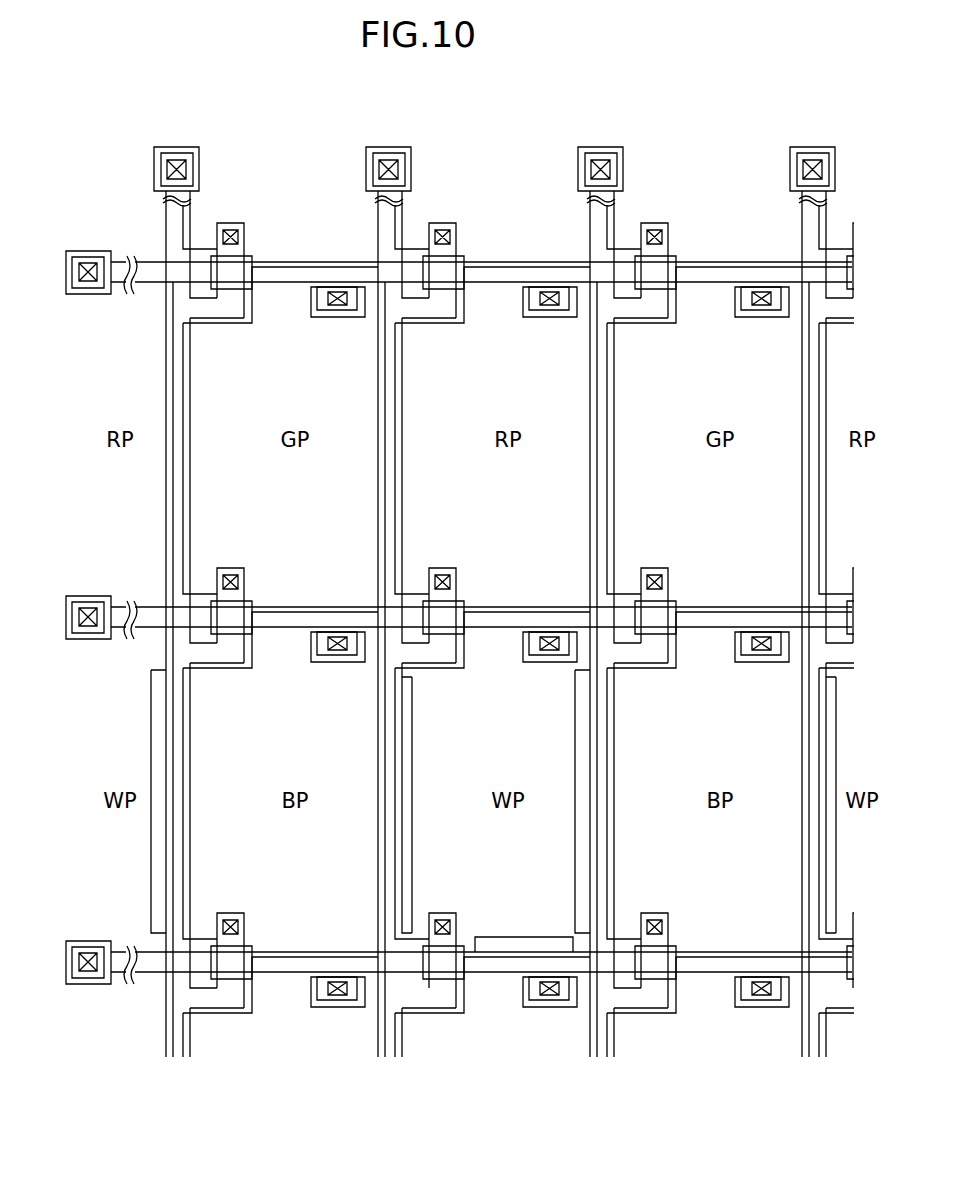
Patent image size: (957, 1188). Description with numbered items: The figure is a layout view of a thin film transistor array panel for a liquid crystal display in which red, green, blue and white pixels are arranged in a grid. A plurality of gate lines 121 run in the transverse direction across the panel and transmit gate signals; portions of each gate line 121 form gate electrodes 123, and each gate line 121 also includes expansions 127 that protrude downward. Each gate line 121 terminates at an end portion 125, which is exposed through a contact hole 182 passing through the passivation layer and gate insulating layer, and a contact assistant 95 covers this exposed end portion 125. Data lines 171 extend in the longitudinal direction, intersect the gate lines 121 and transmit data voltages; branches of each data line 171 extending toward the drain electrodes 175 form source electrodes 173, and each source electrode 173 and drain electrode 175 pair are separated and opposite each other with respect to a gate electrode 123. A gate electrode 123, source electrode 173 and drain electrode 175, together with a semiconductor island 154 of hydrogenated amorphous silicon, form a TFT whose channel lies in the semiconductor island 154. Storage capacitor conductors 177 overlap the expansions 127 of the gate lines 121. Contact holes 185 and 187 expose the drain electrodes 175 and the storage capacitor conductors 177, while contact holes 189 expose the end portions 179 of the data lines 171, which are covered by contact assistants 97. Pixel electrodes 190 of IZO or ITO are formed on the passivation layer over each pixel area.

The contact assistant (gate pad) 95 is at (104, 636).
The contact assistant 97 is at (412, 181).
The gate line 121 is at (301, 262).
The gate electrode 123 is at (246, 280).
The end portion of the gate line 125 is at (75, 294).
The expansion 127 is at (323, 311).
The semiconductor island 154 is at (208, 272).
The data line 171 is at (164, 383).
The source electrode 173 is at (224, 320).
The drain electrode 175 is at (233, 223).
The storage capacitor conductor 177 is at (356, 318).
The end portion of the data line 179 is at (200, 163).
The contact hole 182 is at (91, 283).
The contact hole 185 is at (240, 238).
The contact hole 187 is at (336, 290).
The contact hole 189 is at (388, 162).
The pixel electrode 190 is at (554, 811).